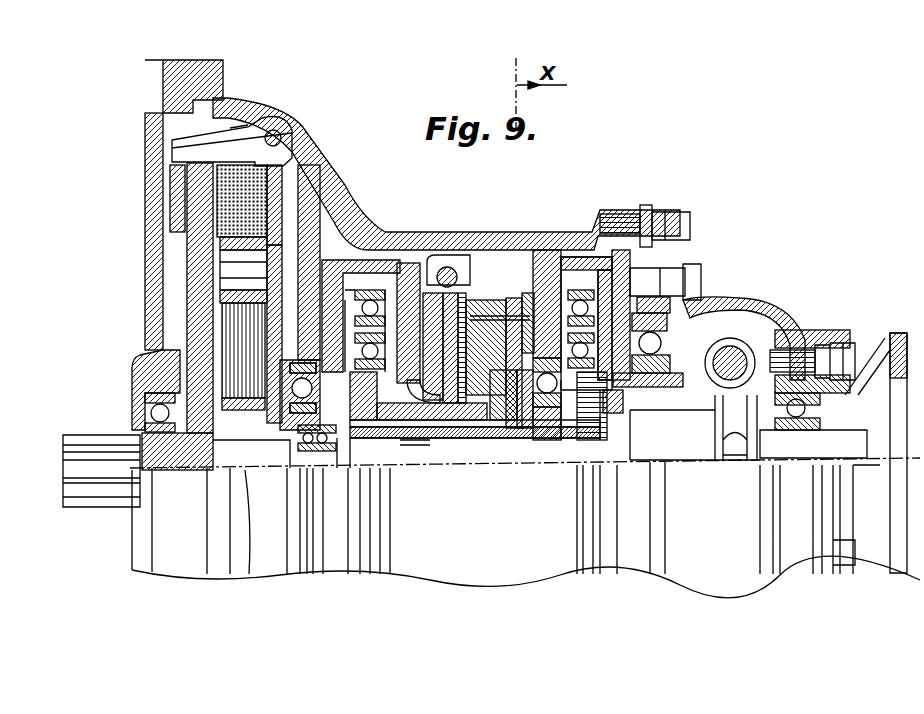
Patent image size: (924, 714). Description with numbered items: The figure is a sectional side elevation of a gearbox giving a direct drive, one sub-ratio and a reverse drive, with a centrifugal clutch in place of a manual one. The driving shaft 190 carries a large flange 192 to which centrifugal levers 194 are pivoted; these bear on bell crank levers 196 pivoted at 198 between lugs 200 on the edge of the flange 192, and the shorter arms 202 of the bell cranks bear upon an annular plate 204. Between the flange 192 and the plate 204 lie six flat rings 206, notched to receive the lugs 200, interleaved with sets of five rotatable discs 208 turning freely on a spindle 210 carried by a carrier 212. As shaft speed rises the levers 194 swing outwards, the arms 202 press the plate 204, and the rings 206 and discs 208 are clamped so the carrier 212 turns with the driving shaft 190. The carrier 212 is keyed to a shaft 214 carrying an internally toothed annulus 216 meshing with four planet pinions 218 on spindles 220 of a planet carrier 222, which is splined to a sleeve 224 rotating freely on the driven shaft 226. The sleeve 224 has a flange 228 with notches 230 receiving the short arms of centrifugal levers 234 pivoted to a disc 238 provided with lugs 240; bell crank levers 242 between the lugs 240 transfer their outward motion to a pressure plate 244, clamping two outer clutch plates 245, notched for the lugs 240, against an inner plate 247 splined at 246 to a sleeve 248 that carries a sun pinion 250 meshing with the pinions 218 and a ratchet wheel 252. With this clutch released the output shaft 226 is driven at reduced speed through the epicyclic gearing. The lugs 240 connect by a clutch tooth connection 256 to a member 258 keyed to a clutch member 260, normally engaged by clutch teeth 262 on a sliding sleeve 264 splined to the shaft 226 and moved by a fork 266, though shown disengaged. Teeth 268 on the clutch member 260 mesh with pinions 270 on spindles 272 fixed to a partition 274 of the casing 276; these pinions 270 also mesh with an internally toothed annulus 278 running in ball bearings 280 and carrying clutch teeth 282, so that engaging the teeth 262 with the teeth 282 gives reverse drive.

The driving shaft 190 is at (94, 433).
The large flange 192 is at (188, 282).
The centrifugal levers 194 is at (172, 178).
The bell crank levers 196 is at (232, 148).
The pivot 198 is at (277, 130).
The lugs 200 is at (246, 128).
The shorter arms 202 is at (285, 170).
The annular plate 204 is at (312, 195).
The flat rings 206 is at (222, 202).
The rotatable discs 208 is at (245, 332).
The spindle 210 is at (233, 268).
The carrier 212 is at (207, 447).
The shaft 214 is at (247, 576).
The internally toothed annulus 216 is at (366, 268).
The planet pinions 218 is at (374, 268).
The spindles 220 is at (437, 440).
The planet carrier 222 is at (332, 455).
The sleeve 224 is at (452, 440).
The driven shaft 226 is at (513, 440).
The flange 228 is at (525, 428).
The notches 230 is at (503, 440).
The centrifugal levers 234 is at (528, 292).
The disc 238 is at (500, 295).
The lugs 240 is at (462, 292).
The bell crank levers 242 is at (443, 262).
The pressure plate 244 is at (435, 292).
The outer clutch plates 245 is at (519, 320).
The splines 246 is at (432, 433).
The inner clutch plate 247 is at (476, 300).
The sleeve 248 is at (412, 440).
The sun pinion 250 is at (400, 440).
The ratchet wheel 252 is at (402, 262).
The clutch tooth connection 256 is at (548, 256).
The member 258 is at (548, 440).
The clutch member 260 is at (702, 282).
The clutch teeth 262 is at (600, 442).
The sliding sleeve 264 is at (705, 450).
The fork 266 is at (755, 372).
The teeth 268 is at (690, 272).
The pinions 270 is at (645, 214).
The spindles 272 is at (686, 216).
The partition 274 is at (550, 265).
The casing 276 is at (605, 222).
The internally toothed annulus 278 is at (583, 288).
The ball bearings 280 is at (668, 335).
The clutch teeth 282 is at (630, 398).